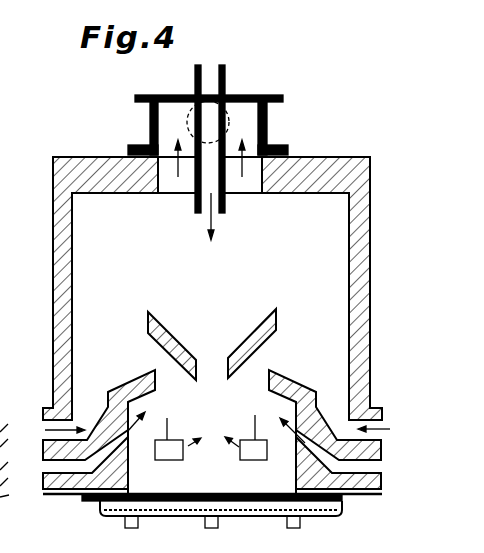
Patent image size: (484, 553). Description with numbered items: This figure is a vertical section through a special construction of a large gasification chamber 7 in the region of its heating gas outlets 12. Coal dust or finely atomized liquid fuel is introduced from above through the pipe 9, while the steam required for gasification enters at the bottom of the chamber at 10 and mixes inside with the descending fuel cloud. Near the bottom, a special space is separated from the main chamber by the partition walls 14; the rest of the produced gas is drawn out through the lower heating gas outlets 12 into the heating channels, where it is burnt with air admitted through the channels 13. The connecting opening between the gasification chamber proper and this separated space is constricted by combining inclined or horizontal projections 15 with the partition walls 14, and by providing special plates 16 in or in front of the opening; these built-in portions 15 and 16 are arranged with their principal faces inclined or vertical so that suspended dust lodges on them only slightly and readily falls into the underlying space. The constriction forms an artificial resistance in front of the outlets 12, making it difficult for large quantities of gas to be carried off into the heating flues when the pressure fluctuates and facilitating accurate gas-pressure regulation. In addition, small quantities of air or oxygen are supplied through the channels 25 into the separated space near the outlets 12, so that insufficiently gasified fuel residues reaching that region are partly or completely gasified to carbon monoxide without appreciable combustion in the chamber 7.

The gasification chamber 7 is at (212, 288).
The pipe 9 is at (210, 73).
The steam inlet 10 is at (45, 424).
The heating gas outlets 12 is at (183, 458).
The air channels 13 is at (13, 460).
The partition walls 14 is at (128, 486).
The inclined or horizontal projections 15 is at (138, 379).
The plates 16 is at (237, 351).
The channels 25 is at (43, 468).